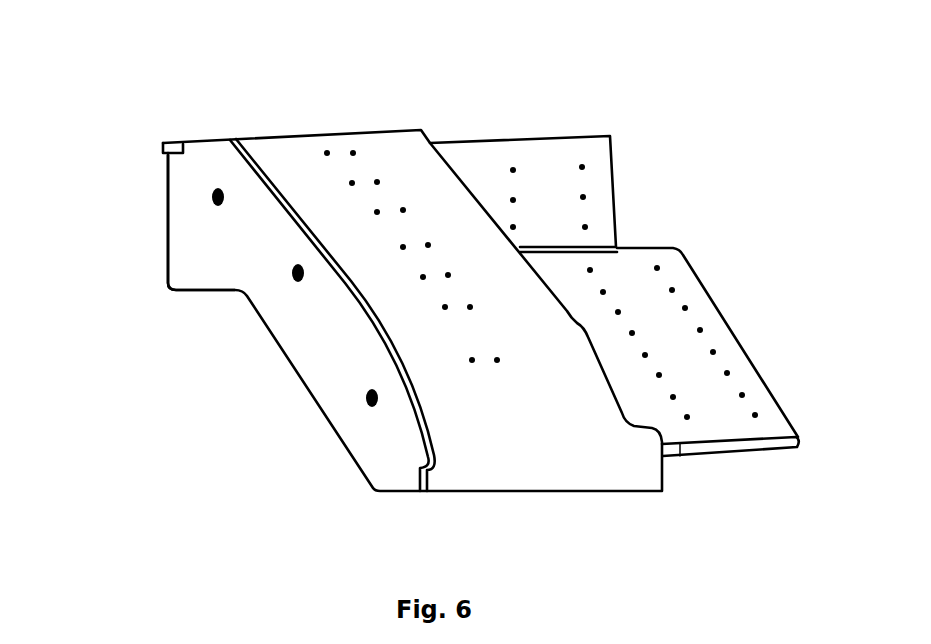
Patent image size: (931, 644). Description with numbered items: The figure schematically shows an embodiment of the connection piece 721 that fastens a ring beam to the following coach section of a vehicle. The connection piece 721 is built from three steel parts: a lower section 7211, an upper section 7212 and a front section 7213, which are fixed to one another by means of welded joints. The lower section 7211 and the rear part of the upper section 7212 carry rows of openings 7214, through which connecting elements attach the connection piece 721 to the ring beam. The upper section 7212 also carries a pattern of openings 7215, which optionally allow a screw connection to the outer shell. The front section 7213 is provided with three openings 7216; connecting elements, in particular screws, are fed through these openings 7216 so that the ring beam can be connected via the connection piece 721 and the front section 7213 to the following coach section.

The connection piece 721 is at (437, 294).
The lower section 7211 is at (717, 418).
The upper section 7212 is at (525, 463).
The front section 7213 is at (200, 243).
The openings 7214 is at (673, 288).
The openings 7215 is at (347, 148).
The openings 7216 is at (363, 405).